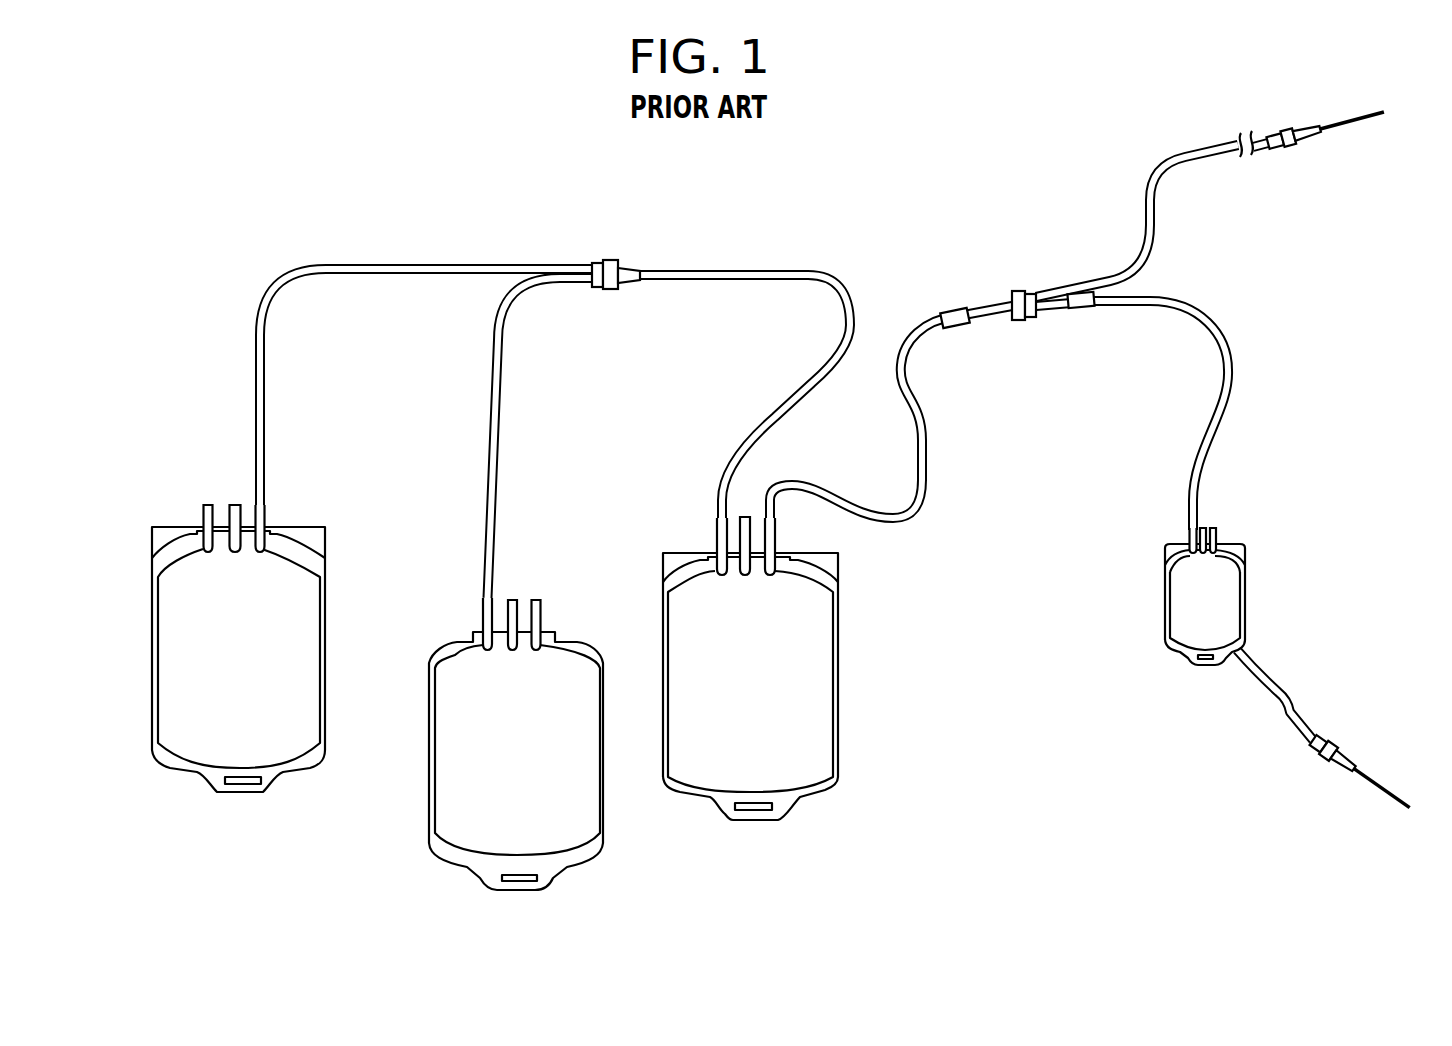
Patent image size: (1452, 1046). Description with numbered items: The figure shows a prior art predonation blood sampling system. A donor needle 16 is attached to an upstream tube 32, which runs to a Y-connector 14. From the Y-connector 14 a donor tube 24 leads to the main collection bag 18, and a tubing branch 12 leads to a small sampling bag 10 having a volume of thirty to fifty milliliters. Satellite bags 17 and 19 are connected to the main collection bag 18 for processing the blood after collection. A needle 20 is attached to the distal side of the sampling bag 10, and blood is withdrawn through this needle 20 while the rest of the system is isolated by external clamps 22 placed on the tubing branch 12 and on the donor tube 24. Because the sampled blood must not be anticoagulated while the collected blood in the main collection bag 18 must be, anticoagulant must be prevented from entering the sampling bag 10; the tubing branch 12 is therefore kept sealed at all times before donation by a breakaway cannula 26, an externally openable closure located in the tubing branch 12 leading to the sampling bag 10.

The sampling bag 10 is at (1177, 597).
The tubing branch 12 is at (1225, 366).
The Y-connector 14 is at (1017, 298).
The donor needle 16 is at (1350, 124).
The satellite bag 17 is at (296, 752).
The main collection bag 18 is at (806, 778).
The satellite bag 19 is at (574, 848).
The needle 20 is at (1386, 788).
The external clamps 22 is at (1081, 295).
The donor tube 24 is at (915, 433).
The breakaway cannula 26 is at (1023, 335).
The upstream tube 32 is at (1156, 182).